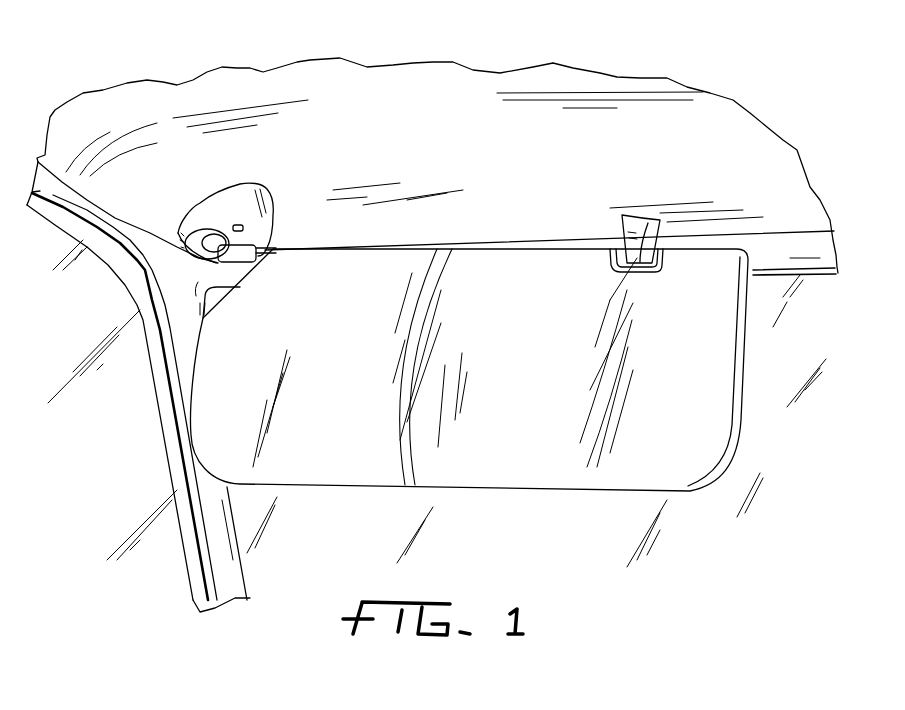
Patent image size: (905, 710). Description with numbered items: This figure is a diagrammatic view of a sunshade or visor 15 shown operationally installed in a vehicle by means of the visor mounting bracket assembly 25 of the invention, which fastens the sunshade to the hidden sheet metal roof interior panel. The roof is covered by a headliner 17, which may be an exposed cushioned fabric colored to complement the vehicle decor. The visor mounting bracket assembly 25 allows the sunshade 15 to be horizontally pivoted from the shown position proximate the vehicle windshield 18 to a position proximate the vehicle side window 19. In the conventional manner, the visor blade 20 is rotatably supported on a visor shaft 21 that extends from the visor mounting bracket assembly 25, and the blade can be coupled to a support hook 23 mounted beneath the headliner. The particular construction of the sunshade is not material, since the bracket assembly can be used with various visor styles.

The sunshade or visor 15 is at (739, 424).
The headliner 17 is at (457, 143).
The vehicle windshield 18 is at (800, 353).
The vehicle side window 19 is at (88, 316).
The visor blade 20 is at (518, 450).
The visor shaft 21 is at (282, 243).
The support hook 23 is at (643, 247).
The visor mounting bracket assembly 25 is at (200, 190).